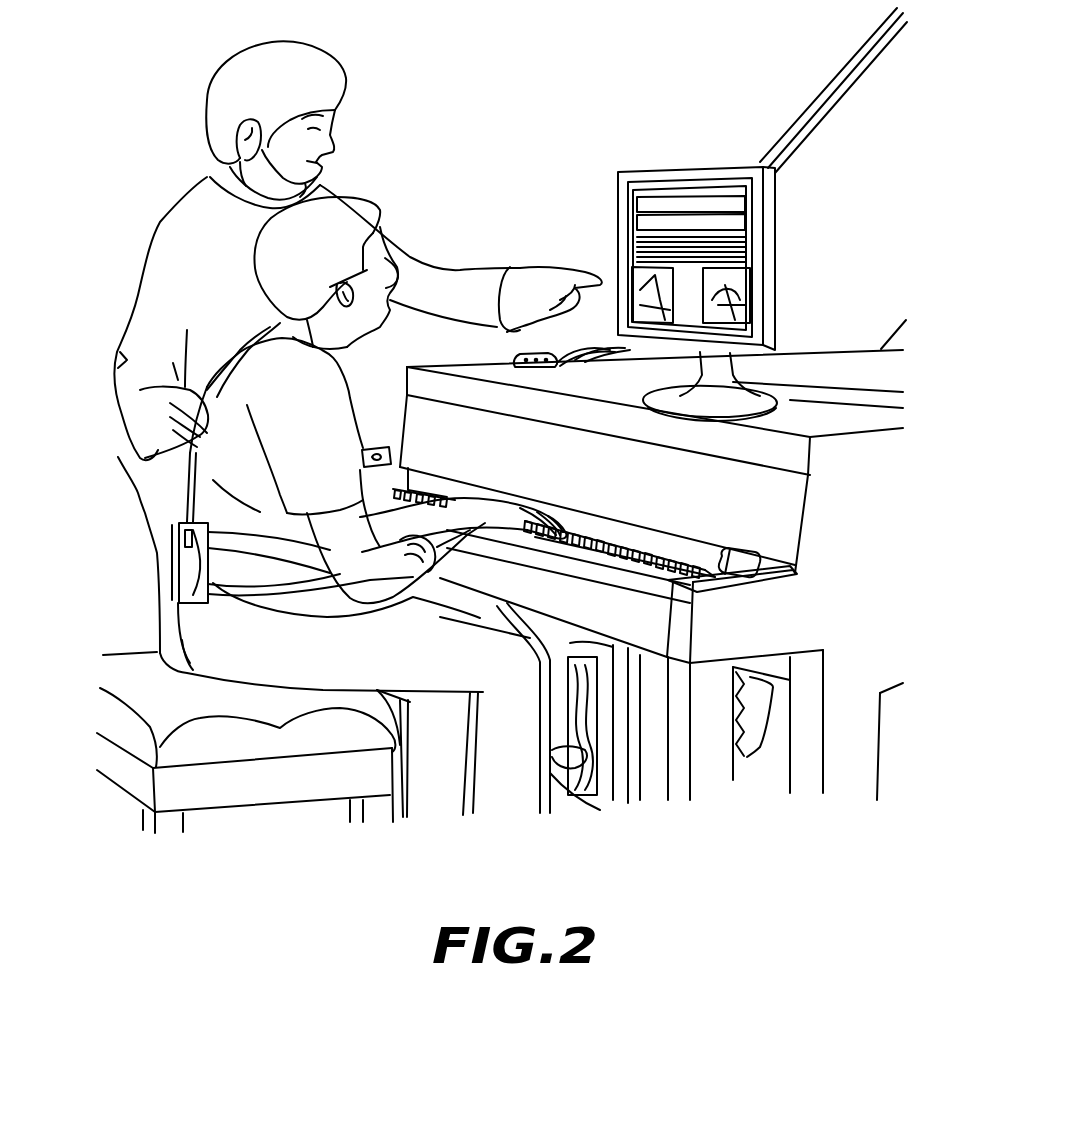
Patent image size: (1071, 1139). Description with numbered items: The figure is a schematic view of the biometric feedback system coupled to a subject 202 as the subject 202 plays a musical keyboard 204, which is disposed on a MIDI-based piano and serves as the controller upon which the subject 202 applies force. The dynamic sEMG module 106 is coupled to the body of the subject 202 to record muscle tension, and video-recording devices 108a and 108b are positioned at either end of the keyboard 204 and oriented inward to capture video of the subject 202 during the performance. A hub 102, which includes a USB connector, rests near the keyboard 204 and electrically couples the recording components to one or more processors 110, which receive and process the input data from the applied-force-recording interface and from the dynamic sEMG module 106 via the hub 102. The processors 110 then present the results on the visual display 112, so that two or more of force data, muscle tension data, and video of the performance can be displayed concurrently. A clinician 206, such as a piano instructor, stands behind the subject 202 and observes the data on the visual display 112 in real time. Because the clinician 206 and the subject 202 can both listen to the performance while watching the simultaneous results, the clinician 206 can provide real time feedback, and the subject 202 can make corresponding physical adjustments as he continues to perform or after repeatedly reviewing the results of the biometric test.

The hub 102 is at (510, 351).
The dynamic sEMG module 106 is at (160, 546).
The video-recording device 108a is at (376, 433).
The video-recording device 108b is at (748, 545).
The processor 110 is at (648, 713).
The visual display 112 is at (628, 138).
The subject 202 is at (404, 206).
The musical keyboard 204 is at (612, 510).
The clinician 206 is at (363, 102).